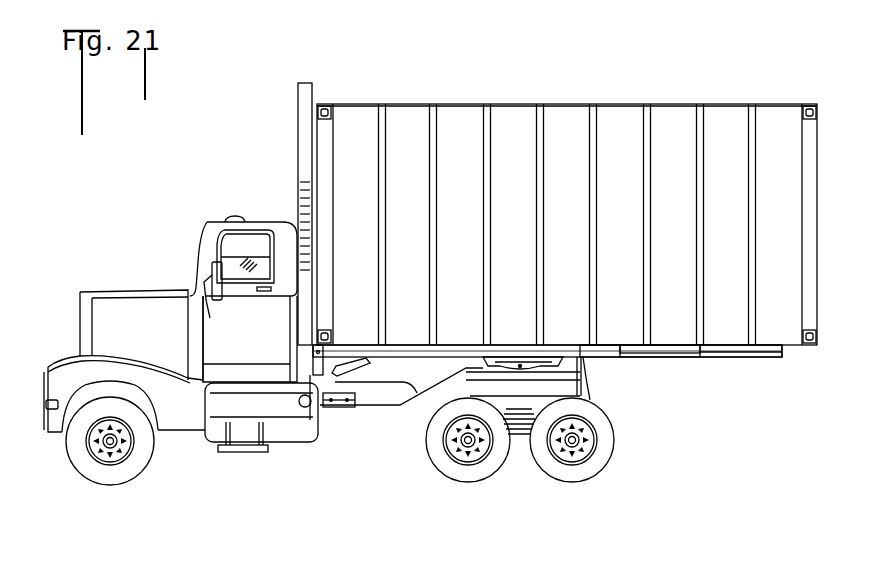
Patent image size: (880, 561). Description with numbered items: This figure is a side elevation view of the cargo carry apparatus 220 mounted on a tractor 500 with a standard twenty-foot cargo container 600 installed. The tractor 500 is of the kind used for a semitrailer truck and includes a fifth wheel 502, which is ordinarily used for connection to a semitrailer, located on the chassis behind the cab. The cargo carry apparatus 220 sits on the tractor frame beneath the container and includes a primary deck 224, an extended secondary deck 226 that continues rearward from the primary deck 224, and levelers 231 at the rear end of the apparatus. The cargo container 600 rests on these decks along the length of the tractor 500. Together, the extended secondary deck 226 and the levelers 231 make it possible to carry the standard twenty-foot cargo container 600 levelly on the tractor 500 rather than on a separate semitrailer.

The cargo container 600 is at (736, 74).
The tractor 500 is at (210, 206).
The cargo carry apparatus 220 is at (660, 400).
The primary deck 224 is at (582, 356).
The extended secondary deck 226 is at (658, 354).
The levelers 231 is at (694, 352).
The fifth wheel 502 is at (486, 366).